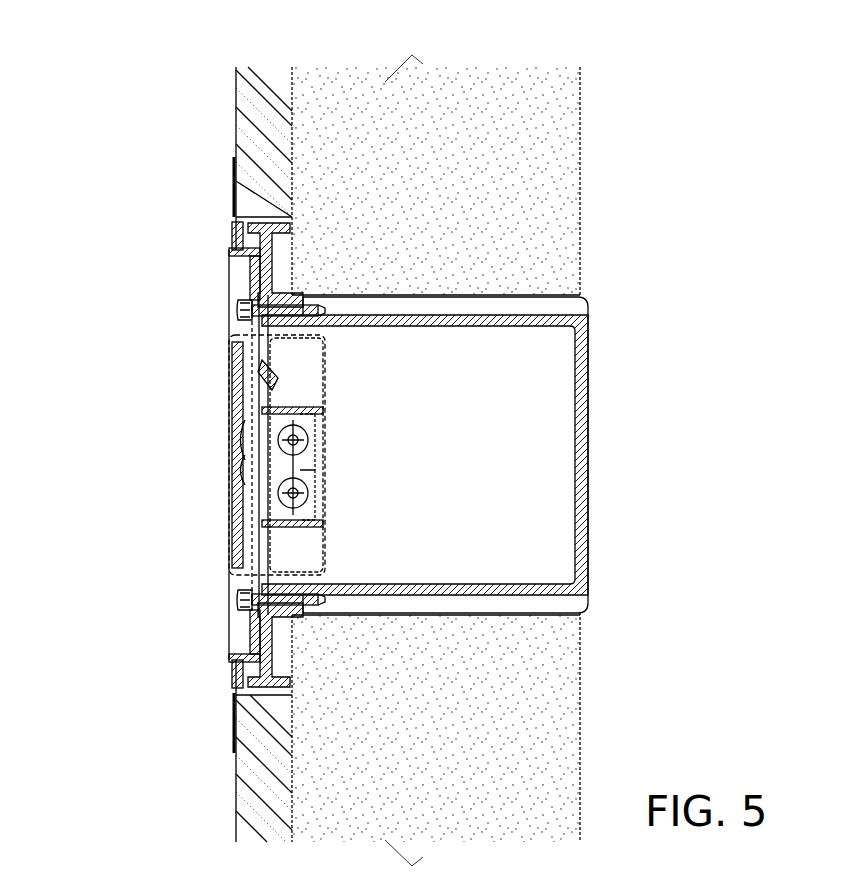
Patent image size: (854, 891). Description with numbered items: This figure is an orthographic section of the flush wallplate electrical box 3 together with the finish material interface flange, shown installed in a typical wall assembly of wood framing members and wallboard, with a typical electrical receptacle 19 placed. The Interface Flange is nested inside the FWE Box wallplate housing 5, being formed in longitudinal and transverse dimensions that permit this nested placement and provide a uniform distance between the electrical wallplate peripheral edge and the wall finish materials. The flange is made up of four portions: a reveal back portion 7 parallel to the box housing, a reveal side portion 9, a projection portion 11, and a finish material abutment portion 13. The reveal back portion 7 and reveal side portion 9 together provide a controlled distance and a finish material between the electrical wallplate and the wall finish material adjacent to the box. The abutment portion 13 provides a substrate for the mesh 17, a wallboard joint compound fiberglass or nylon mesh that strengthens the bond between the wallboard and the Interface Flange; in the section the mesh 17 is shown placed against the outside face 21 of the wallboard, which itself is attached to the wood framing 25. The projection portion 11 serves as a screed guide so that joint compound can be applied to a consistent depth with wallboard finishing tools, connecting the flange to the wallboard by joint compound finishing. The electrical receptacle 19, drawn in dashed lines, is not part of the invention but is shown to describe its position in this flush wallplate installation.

The flush wallplate electrical box 3 is at (602, 372).
The FWE Box wallplate housing 5 is at (290, 258).
The reveal back portion 7 is at (257, 260).
The reveal side portion 9 is at (247, 255).
The projection portion 11 is at (237, 250).
The finish material abutment portion 13 is at (242, 233).
The mesh 17 is at (234, 195).
The electrical receptacle 19 is at (220, 451).
The outside face of the wallboard 21 is at (236, 92).
The wood framing 25 is at (500, 190).